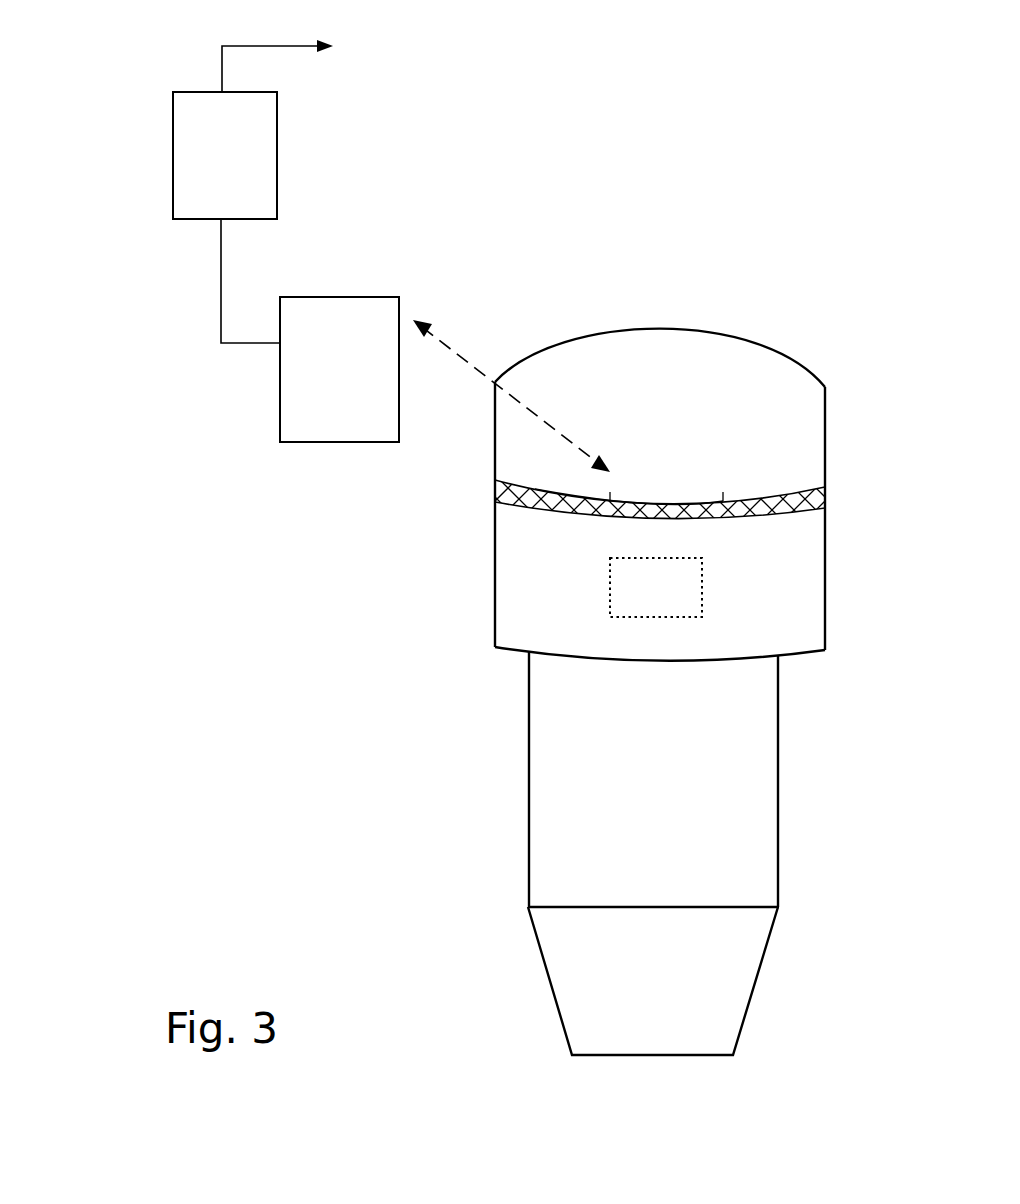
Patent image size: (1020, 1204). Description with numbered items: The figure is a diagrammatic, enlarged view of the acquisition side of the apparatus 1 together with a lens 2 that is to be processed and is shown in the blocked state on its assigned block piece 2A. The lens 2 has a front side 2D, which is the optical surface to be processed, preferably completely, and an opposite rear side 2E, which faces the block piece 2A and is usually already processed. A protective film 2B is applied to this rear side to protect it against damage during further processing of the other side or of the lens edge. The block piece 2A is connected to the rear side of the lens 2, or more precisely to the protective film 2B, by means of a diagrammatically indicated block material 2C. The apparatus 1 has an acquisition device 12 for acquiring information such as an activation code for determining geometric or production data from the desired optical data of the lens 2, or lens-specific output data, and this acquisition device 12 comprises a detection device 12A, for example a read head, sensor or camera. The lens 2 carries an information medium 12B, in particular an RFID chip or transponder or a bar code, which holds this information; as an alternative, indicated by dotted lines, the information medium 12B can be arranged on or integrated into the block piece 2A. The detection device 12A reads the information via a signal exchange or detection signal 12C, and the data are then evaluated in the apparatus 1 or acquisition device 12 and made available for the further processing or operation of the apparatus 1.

The apparatus 1 is at (128, 138).
The lens 2 is at (637, 620).
The block piece 2A is at (520, 610).
The protective film 2B is at (495, 483).
The block material 2C is at (495, 497).
The front side 2D is at (782, 347).
The rear side 2E is at (737, 517).
The acquisition device 12 is at (256, 121).
The detection device 12A is at (352, 320).
The information medium 12B is at (673, 498).
The detection signal 12C is at (455, 353).